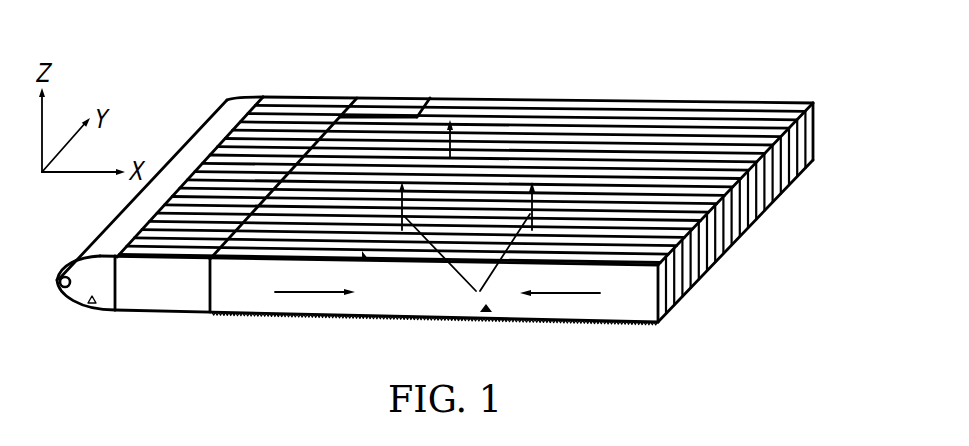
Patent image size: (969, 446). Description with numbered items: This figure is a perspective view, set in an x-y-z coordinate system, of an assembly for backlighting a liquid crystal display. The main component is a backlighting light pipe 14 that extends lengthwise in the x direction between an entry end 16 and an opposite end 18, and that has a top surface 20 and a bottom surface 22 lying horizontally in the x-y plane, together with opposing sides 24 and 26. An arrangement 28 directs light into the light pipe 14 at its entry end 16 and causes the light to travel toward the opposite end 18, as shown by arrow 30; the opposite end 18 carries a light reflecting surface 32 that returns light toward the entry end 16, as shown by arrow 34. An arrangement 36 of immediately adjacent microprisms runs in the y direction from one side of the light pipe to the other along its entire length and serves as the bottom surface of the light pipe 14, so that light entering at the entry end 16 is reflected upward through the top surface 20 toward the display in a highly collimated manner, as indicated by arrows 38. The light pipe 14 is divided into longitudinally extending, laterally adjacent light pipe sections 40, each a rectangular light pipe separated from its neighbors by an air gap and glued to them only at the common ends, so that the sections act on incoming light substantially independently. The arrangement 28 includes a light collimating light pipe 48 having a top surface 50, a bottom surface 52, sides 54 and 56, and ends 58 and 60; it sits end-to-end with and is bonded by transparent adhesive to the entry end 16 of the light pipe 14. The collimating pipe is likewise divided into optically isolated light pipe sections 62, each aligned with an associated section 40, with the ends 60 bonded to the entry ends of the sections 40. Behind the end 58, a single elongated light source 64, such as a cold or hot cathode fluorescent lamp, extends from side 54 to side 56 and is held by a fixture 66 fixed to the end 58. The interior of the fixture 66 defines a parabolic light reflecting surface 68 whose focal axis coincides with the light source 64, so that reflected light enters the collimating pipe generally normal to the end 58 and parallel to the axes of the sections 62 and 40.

The backlighting light pipe 14 is at (743, 208).
The entry end 16 is at (205, 314).
The opposite end 18 is at (735, 257).
The top surface 20 is at (404, 75).
The bottom surface 22 is at (504, 336).
The side 24 is at (434, 338).
The side 26 is at (567, 119).
The arrangement for directing light 28 is at (217, 65).
The arrow 30 is at (315, 334).
The light reflecting surface 32 is at (620, 335).
The arrow 34 is at (560, 346).
The arrangement of microprisms 36 is at (445, 342).
The arrows 38 is at (467, 213).
The light pipe sections 40 is at (391, 276).
The light collimating light pipe 48 is at (462, 135).
The top surface 50 is at (354, 74).
The bottom surface 52 is at (183, 364).
The side 54 is at (283, 138).
The side 56 is at (379, 327).
The end 58 is at (70, 243).
The end 60 is at (457, 92).
The light pipe sections 62 is at (161, 188).
The light source 64 is at (35, 268).
The fixture 66 is at (62, 311).
The light reflecting parabolic surface 68 is at (75, 334).